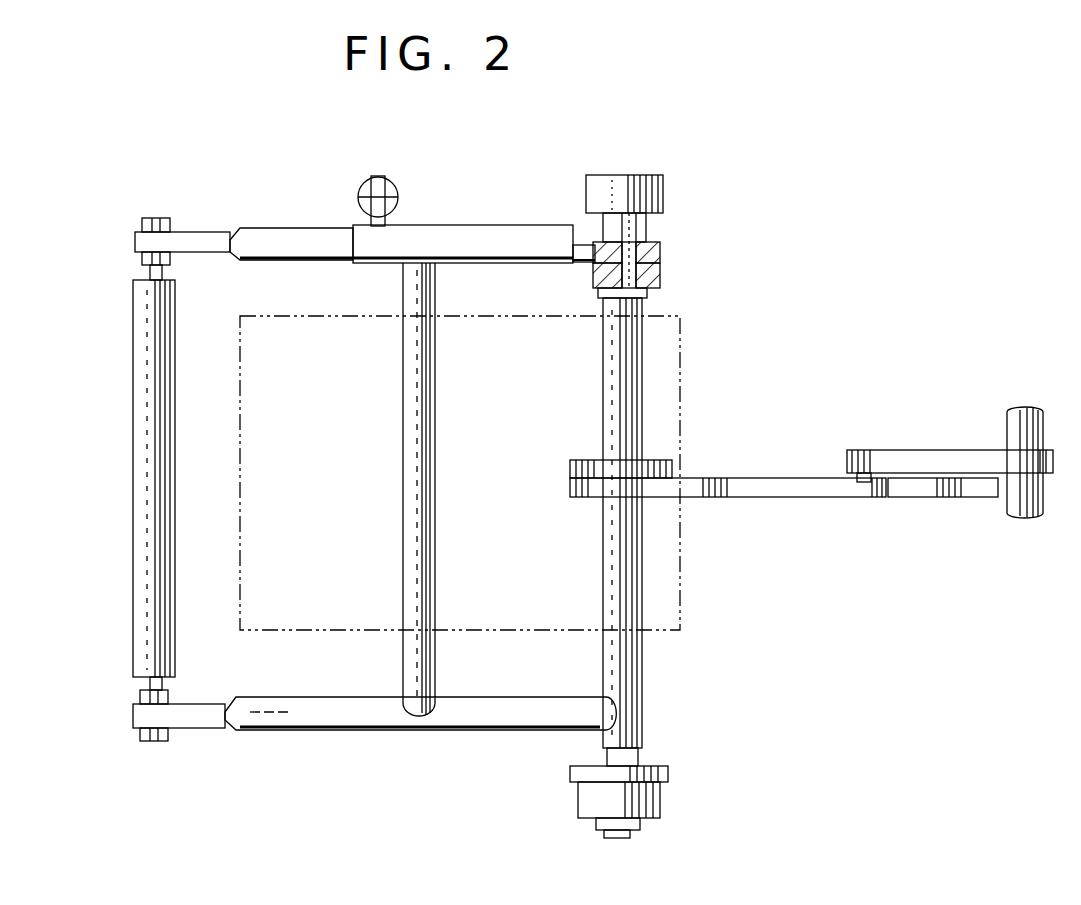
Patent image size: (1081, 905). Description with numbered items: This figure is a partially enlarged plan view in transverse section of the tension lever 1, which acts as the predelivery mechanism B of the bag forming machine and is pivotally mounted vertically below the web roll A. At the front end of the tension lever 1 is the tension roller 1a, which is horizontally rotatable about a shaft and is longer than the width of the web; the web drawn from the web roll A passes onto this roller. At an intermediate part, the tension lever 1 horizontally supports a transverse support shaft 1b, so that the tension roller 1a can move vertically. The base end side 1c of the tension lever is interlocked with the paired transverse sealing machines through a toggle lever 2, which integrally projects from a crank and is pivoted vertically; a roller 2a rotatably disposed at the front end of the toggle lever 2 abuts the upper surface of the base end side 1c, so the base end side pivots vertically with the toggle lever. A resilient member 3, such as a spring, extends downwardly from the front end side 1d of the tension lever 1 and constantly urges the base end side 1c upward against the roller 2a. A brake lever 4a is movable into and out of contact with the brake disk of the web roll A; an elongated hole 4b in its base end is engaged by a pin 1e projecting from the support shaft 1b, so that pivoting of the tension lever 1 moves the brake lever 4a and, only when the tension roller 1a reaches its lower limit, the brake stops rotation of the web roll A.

The tension lever 1 is at (470, 735).
The tension roller 1a is at (133, 458).
The support shaft 1b is at (606, 560).
The base end side 1c is at (745, 478).
The front end side 1d is at (288, 732).
The pin 1e is at (650, 279).
The toggle lever 2 is at (942, 450).
The roller 2a is at (855, 498).
The resilient member 3 is at (386, 198).
The brake lever 4a is at (600, 246).
The elongated hole 4b is at (636, 236).
The web roll A is at (289, 316).
The predelivery mechanism B is at (133, 608).